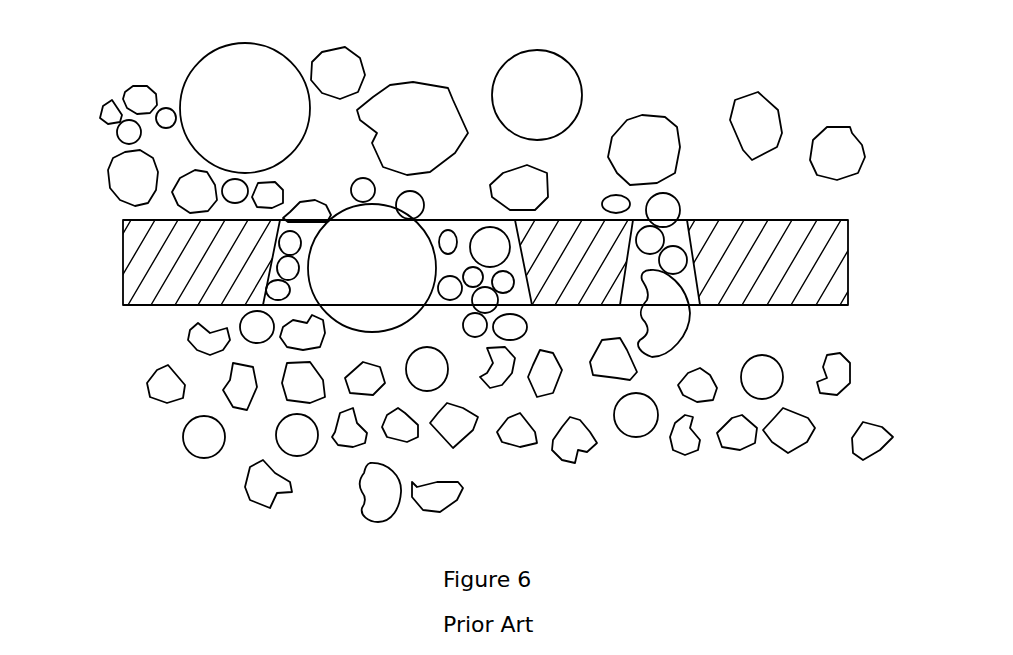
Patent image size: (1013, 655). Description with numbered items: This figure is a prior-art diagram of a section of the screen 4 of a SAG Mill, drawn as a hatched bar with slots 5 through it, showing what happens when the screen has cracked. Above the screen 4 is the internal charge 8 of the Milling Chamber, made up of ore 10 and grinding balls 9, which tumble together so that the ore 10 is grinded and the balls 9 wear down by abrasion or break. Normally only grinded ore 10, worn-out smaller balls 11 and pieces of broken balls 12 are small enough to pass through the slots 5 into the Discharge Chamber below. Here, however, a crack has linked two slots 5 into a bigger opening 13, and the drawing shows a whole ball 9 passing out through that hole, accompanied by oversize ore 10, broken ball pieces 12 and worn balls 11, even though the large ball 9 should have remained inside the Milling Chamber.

The screen 4 is at (439, 262).
The slots 5 is at (792, 262).
The internal charge 8 is at (106, 85).
The balls 9 is at (364, 171).
The ore 10 is at (530, 264).
The smaller balls 11 is at (389, 464).
The broken balls 12 is at (597, 404).
The bigger opening 13 is at (486, 207).